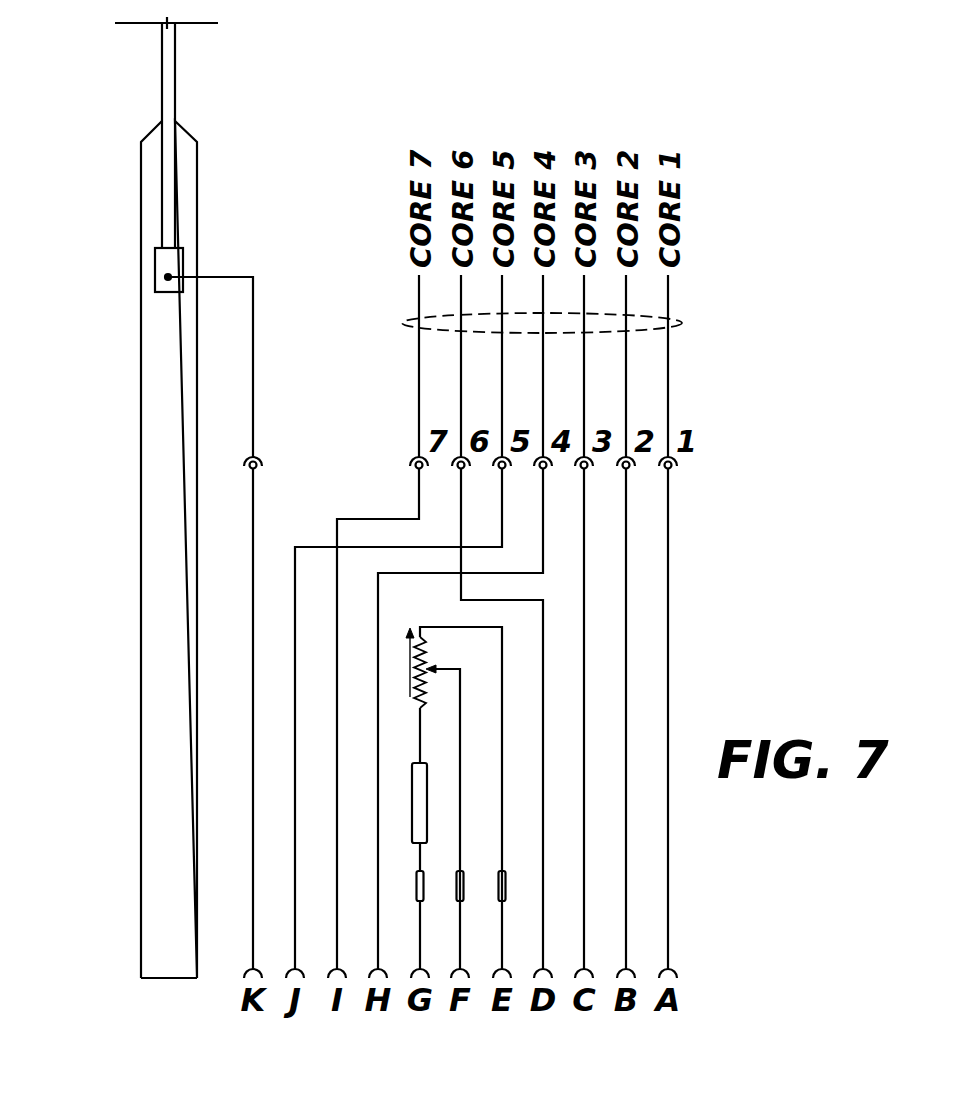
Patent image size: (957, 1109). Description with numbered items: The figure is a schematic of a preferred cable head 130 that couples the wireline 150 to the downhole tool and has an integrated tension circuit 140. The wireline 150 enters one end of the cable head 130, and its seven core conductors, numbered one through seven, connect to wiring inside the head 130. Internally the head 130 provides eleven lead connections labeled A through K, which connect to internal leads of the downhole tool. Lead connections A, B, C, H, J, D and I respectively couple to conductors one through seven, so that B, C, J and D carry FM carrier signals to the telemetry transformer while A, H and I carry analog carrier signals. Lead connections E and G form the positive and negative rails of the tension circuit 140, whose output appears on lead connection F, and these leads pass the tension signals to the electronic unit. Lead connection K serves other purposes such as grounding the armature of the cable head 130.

The cable head 130 is at (141, 188).
The tension circuit 140 is at (441, 798).
The wireline 150 is at (162, 73).